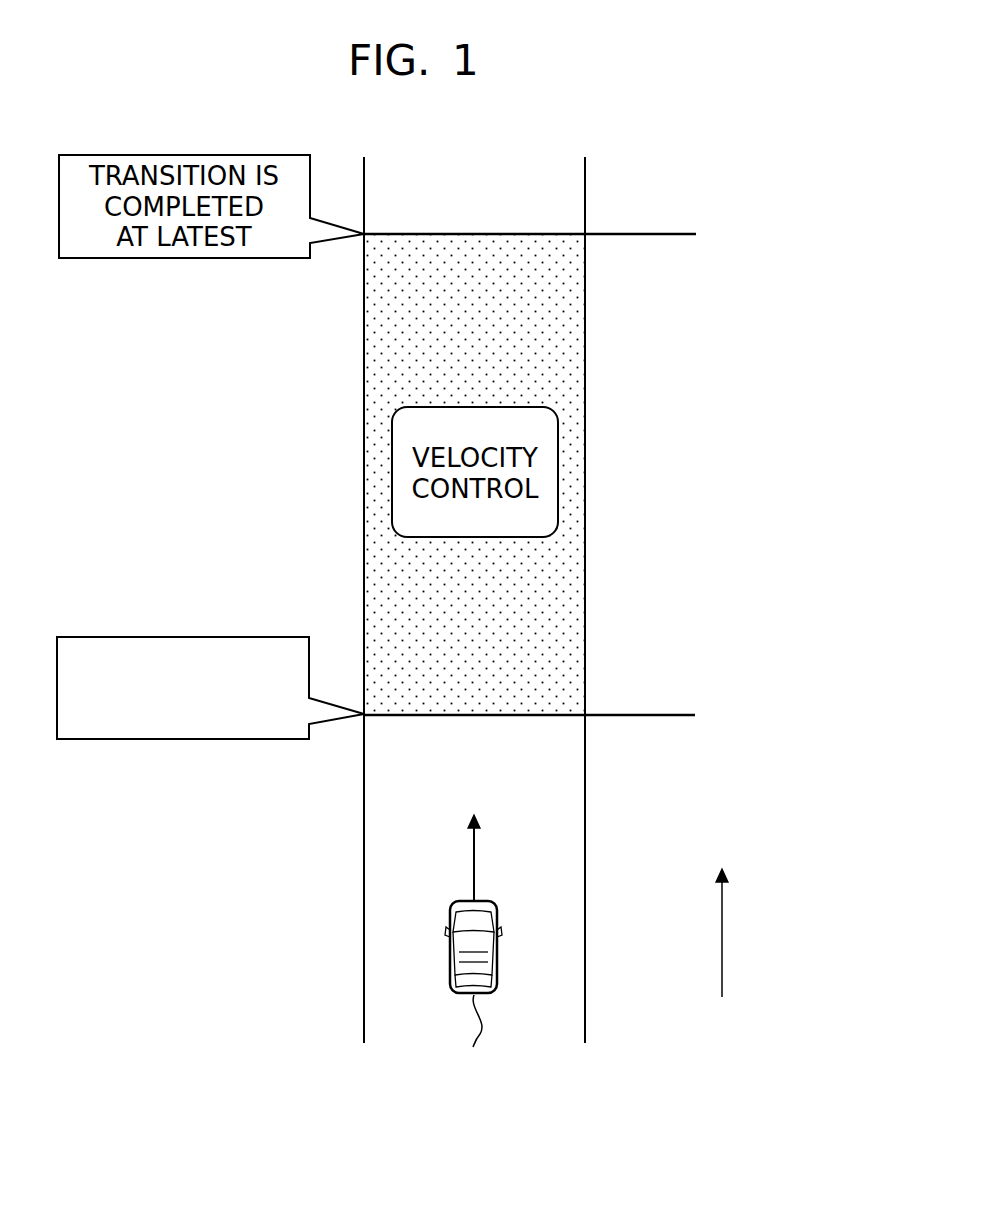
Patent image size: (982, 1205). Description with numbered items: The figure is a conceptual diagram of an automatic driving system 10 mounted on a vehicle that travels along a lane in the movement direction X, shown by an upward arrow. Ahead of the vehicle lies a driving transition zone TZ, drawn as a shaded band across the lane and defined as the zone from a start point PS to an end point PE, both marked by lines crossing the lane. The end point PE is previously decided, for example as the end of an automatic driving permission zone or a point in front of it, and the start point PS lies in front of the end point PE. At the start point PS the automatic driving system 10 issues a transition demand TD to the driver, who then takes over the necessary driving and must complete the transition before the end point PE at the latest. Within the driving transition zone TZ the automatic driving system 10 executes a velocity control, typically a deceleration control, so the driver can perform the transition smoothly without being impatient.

The automatic driving system 10 is at (373, 927).
The driving transition zone TZ is at (639, 713).
The end point PE is at (552, 234).
The start point PS is at (552, 714).
The transition demand TD is at (210, 688).
The movement direction X is at (722, 912).